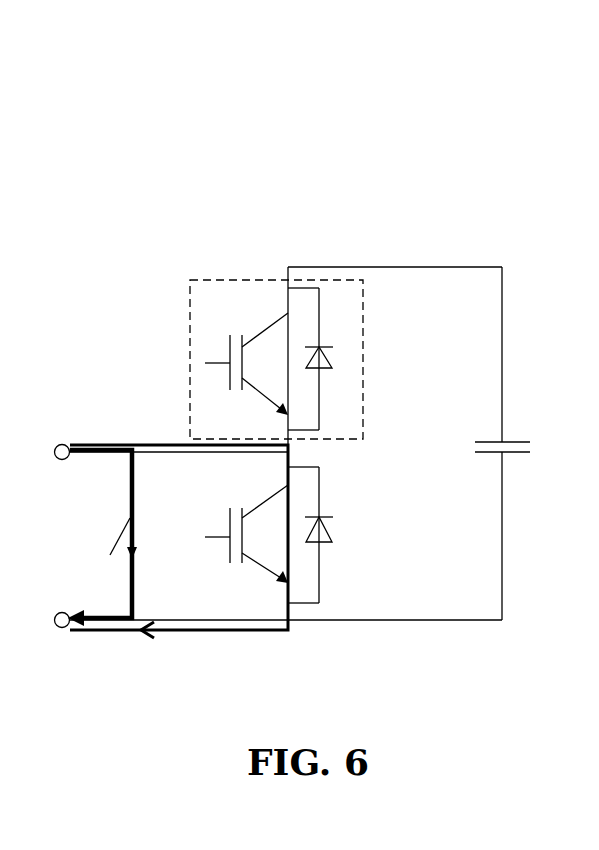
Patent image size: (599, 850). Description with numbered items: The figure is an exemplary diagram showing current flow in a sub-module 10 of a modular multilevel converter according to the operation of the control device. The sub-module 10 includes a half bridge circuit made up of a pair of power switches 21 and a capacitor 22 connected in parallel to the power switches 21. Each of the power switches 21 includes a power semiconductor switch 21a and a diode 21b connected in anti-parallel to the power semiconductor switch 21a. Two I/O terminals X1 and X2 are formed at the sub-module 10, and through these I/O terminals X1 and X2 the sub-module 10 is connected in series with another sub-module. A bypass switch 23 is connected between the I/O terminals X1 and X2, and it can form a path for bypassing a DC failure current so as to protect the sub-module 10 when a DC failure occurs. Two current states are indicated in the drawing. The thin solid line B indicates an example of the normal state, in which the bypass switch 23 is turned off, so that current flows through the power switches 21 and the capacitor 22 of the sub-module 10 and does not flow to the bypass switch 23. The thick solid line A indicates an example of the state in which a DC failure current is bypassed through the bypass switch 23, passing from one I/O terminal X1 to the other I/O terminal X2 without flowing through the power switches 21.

The sub-module 10 is at (285, 319).
The power switches 21 is at (189, 298).
The power semiconductor switch 21a is at (264, 326).
The diode 21b is at (321, 345).
The capacitor 22 is at (518, 440).
The bypass switch 23 is at (121, 536).
The I/O terminal X1 is at (45, 452).
The I/O terminal X2 is at (45, 620).
The thick solid line A is at (101, 636).
The thin solid line B is at (179, 636).